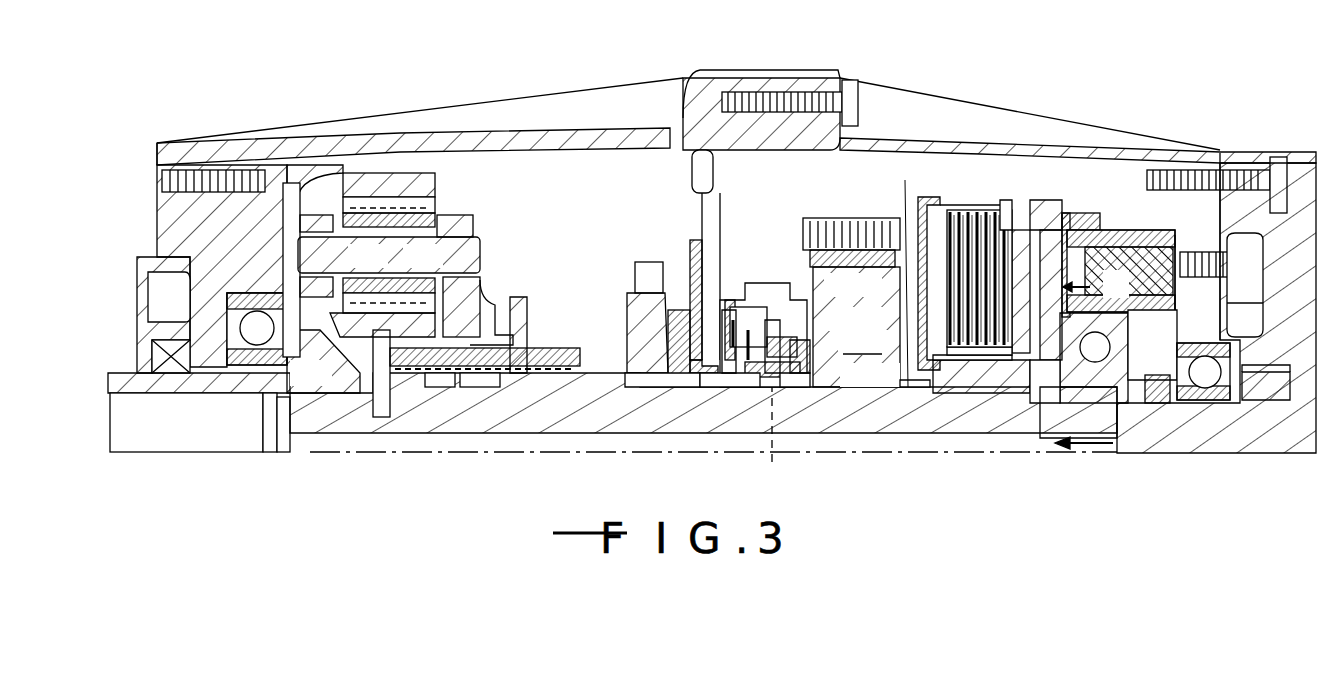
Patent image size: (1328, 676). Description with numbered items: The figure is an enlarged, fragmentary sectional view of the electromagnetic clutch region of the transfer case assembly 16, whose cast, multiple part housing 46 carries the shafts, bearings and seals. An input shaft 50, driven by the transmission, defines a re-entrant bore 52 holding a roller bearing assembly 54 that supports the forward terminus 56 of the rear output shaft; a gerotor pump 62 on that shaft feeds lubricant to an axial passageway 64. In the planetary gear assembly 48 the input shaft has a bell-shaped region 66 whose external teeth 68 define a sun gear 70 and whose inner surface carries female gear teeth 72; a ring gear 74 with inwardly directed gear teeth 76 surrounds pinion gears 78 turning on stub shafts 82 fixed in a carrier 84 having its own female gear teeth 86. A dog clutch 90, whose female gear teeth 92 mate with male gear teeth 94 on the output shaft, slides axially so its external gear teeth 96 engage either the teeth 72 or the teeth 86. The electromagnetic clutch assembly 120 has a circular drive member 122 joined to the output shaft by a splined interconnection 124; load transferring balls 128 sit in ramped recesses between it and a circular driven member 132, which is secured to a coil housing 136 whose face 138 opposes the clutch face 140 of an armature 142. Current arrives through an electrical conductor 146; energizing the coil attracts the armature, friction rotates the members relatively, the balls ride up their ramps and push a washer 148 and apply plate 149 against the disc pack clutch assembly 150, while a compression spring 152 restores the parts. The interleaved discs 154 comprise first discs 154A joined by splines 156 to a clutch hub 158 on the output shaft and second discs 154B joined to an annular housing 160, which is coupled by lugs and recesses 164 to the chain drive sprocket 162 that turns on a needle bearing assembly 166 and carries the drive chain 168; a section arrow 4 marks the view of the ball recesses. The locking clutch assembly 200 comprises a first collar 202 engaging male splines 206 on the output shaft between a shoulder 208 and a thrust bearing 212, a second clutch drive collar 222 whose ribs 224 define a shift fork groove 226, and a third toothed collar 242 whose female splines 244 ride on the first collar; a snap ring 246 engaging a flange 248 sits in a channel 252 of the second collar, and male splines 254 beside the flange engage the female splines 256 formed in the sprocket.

The direction arrow 4 is at (1070, 463).
The transfer case assembly 16 is at (303, 52).
The housing 46 is at (695, 83).
The planetary gear assembly 48 is at (378, 110).
The input shaft 50 is at (120, 365).
The re-entrant bore 52 is at (181, 432).
The roller bearing assembly 54 is at (312, 403).
The forward terminus 56 is at (338, 422).
The gerotor pump 62 is at (633, 317).
The passageway 64 is at (450, 447).
The bell-shaped region 66 is at (372, 287).
The external teeth 68 is at (389, 255).
The sun gear 70 is at (440, 320).
The female splines or gear teeth 72 is at (437, 400).
The ring gear 74 is at (393, 160).
The inwardly directed gear teeth 76 is at (478, 160).
The pinion gears 78 is at (433, 220).
The stub shafts 82 is at (307, 157).
The carrier 84 is at (290, 285).
The female splines or gear teeth 86 is at (503, 333).
The dog clutch 90 is at (480, 400).
The female splines or gear teeth 92 is at (403, 398).
The male gear teeth 94 is at (547, 347).
The male splines or external gear teeth 96 is at (323, 361).
The electromagnetic clutch assembly 120 is at (1142, 87).
The circular drive member 122 is at (1060, 405).
The splined interconnection 124 is at (1123, 405).
The load transferring balls 128 is at (1100, 362).
The circular driven member 132 is at (1163, 400).
The electromagnetic coil housing 136 is at (1213, 303).
The face 138 is at (1105, 243).
The clutch face 140 is at (1178, 253).
The armature 142 is at (1060, 217).
The electrical conductor 146 is at (1250, 240).
The washer 148 is at (1070, 157).
The apply plate 149 is at (1045, 157).
The disc pack clutch assembly 150 is at (920, 147).
The compression spring 152 is at (1027, 392).
The friction plates or discs 154 is at (925, 240).
The first plurality of discs 154A is at (977, 392).
The second plurality of discs 154B is at (997, 153).
The interengaging splines 156 is at (937, 392).
The clutch hub 158 is at (960, 392).
The annular housing 160 is at (962, 205).
The chain drive sprocket 162 is at (1010, 196).
The interengaging splines or lugs and recesses 164 is at (902, 270).
The roller or needle bearing assembly 166 is at (850, 392).
The drive chain 168 is at (822, 218).
The locking clutch assembly 200 is at (720, 237).
The first or internal collar 202 is at (713, 390).
The male splines or gear teeth 206 is at (808, 392).
The step or shoulder 208 is at (685, 390).
The thrust bearing 212 is at (815, 392).
The second or exterior clutch drive collar 222 is at (692, 307).
The peripheral circumferential ribs 224 is at (702, 290).
The circumferential groove 226 is at (760, 297).
The third or toothed collar 242 is at (780, 280).
The internal gear teeth or female splines 244 is at (772, 300).
The snap ring 246 is at (813, 322).
The flange 248 is at (668, 325).
The channel 252 is at (813, 288).
The male splines or gear teeth 254 is at (735, 390).
The female splines or gear teeth 256 is at (826, 378).